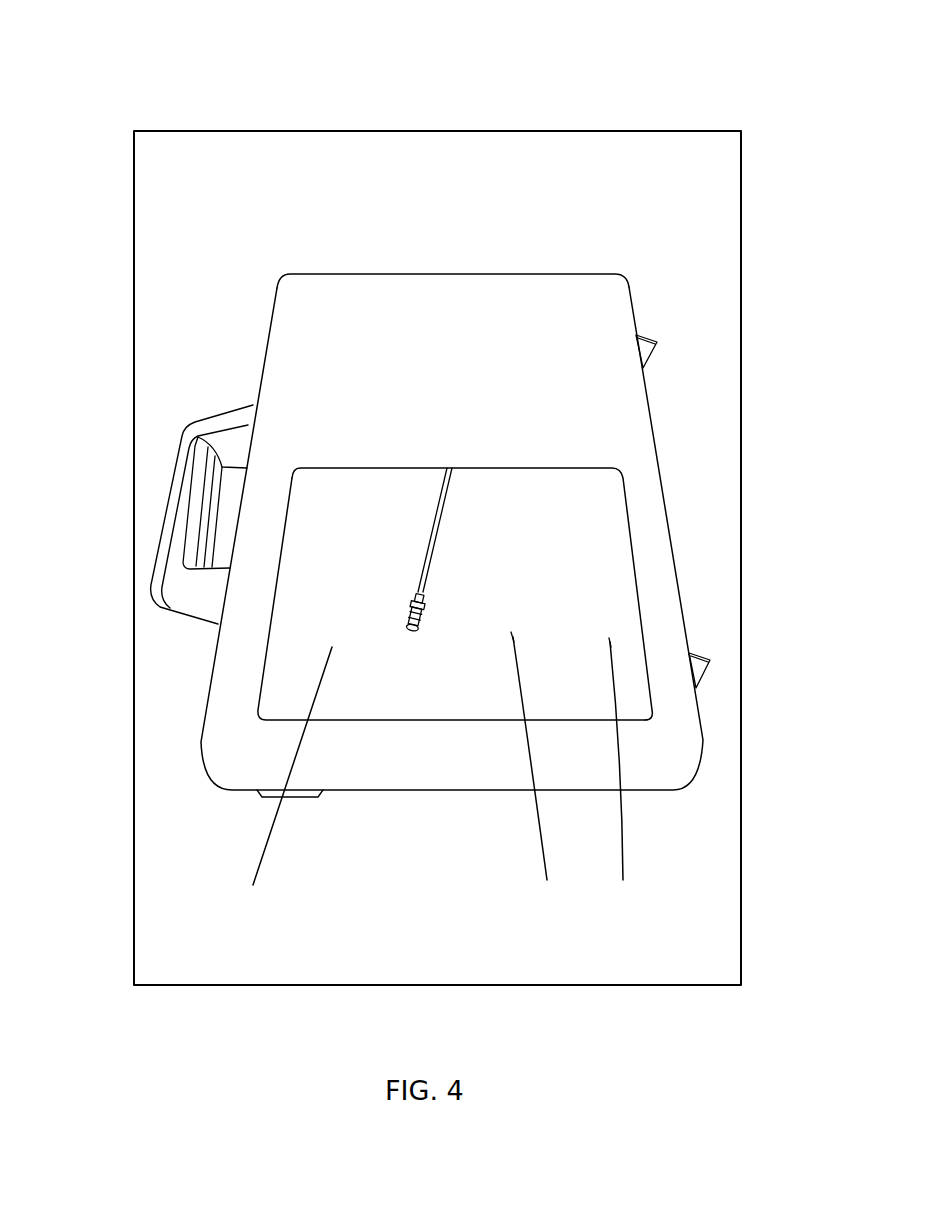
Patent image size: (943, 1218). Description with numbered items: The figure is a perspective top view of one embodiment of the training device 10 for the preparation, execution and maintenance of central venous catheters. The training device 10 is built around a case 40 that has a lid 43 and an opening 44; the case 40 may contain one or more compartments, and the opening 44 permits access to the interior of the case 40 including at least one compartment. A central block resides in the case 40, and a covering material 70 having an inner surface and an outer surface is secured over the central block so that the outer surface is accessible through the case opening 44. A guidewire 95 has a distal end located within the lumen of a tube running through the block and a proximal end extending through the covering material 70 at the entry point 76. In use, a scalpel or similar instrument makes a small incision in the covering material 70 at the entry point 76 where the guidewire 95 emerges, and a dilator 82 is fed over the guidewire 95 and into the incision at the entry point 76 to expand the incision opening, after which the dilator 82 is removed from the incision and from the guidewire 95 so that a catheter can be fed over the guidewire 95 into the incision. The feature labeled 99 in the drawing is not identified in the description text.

The training device 10 is at (282, 78).
The case 40 is at (617, 418).
The lid 43 is at (293, 322).
The opening 44 is at (305, 645).
The covering material 70 is at (610, 532).
The entry point 76 is at (513, 637).
The dilator 82 is at (430, 572).
The guidewire 95 is at (265, 840).
The handle 99 is at (183, 512).